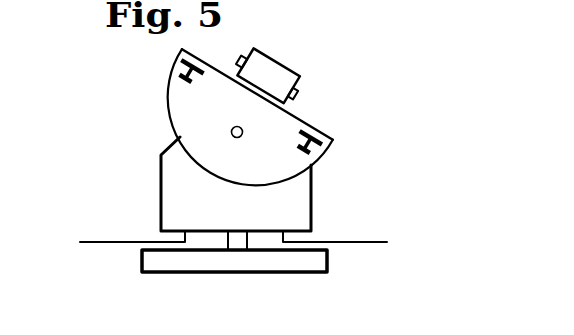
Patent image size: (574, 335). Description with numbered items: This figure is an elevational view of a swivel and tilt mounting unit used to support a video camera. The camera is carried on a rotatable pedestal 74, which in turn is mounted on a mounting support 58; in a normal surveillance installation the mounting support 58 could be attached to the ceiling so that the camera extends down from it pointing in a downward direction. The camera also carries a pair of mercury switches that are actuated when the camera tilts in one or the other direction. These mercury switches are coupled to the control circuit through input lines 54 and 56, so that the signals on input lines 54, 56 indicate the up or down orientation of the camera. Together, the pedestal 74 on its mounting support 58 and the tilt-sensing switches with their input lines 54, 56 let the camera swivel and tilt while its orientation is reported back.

The input line 54 is at (125, 241).
The input line 56 is at (375, 242).
The mounting support 58 is at (328, 262).
The rotatable pedestal 74 is at (312, 195).